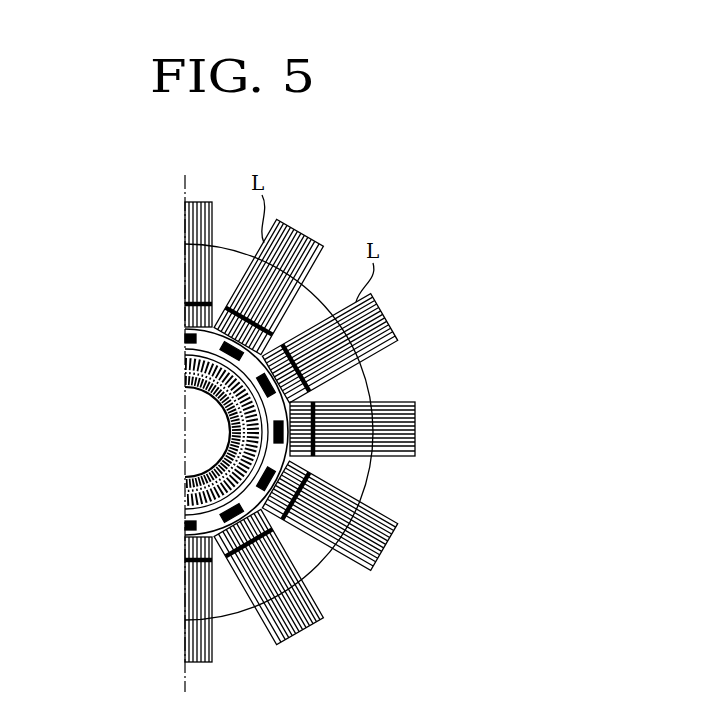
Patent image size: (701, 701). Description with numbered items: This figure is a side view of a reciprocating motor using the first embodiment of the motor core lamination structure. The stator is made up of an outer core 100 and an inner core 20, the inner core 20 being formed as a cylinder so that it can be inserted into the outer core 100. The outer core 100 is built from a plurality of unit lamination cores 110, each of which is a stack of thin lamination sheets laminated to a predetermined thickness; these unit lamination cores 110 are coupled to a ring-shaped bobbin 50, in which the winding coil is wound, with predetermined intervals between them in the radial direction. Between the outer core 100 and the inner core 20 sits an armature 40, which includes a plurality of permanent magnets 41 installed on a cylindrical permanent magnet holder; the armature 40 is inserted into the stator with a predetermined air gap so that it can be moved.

The outer core 100 is at (402, 185).
The unit lamination core 110 is at (328, 236).
The bobbin 50 is at (378, 380).
The armature 40 is at (207, 528).
The permanent magnet 41 is at (285, 518).
The inner core 20 is at (205, 520).